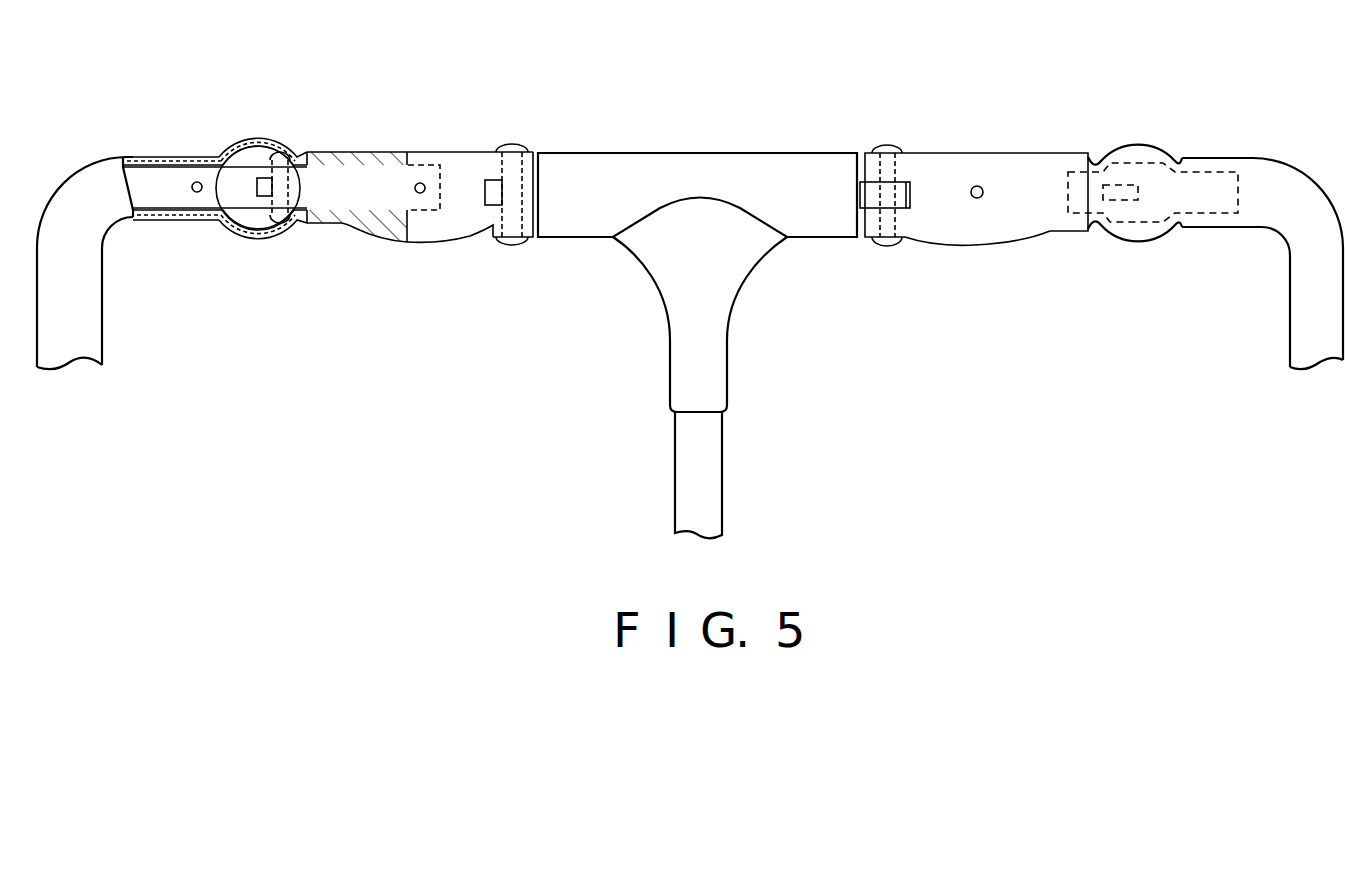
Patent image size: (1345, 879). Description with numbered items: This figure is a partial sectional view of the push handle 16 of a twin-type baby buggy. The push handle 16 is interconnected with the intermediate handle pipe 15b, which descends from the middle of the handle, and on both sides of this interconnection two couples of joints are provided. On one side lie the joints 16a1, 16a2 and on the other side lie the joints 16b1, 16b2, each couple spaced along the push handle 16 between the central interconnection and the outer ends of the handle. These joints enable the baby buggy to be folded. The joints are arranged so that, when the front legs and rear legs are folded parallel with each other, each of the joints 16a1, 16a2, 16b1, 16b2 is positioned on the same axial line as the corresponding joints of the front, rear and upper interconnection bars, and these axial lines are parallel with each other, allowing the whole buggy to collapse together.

The push handle 16 is at (713, 153).
The joint 16a1 is at (272, 158).
The joint 16a2 is at (504, 150).
The joint 16b1 is at (887, 146).
The joint 16b2 is at (1125, 170).
The intermediate handle pipe 15b is at (715, 472).